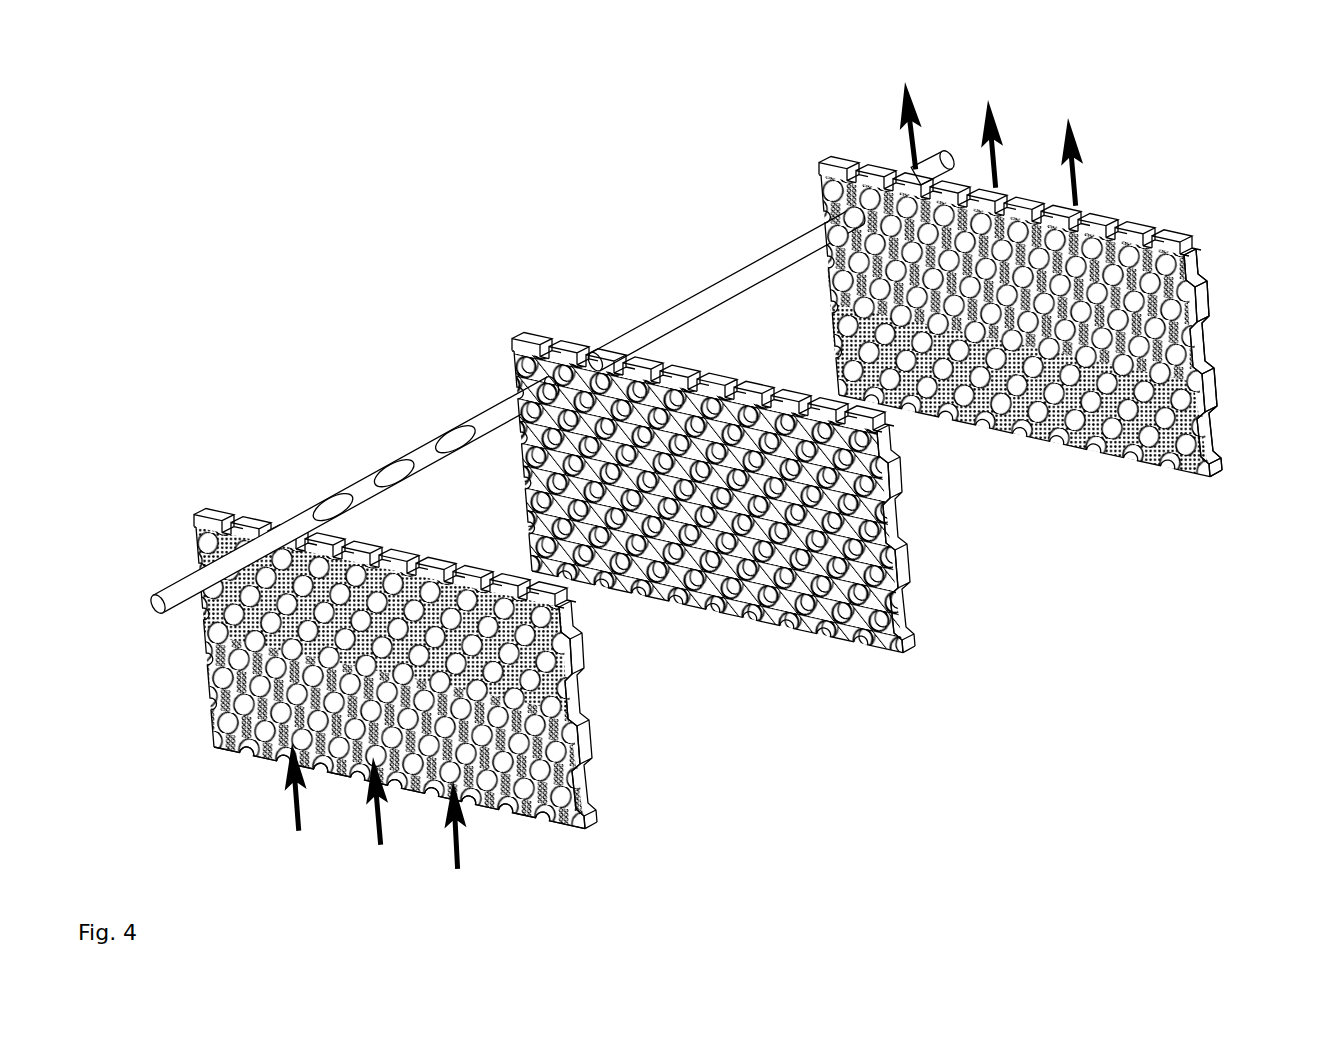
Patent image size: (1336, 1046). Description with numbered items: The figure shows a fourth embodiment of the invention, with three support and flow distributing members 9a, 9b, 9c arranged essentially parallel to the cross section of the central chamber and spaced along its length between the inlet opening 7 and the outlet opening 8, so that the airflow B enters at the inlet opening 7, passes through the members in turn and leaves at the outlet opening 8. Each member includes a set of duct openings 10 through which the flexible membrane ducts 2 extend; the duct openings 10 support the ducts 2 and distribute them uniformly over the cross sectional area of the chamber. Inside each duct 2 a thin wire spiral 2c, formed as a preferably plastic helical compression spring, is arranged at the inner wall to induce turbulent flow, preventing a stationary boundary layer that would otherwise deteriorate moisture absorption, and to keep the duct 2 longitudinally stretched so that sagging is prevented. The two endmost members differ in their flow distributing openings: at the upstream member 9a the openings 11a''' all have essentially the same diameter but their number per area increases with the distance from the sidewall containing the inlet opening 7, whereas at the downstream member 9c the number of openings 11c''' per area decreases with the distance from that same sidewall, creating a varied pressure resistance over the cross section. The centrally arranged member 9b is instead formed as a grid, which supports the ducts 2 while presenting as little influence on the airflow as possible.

The duct 2 is at (500, 403).
The wire spiral 2c is at (355, 480).
The inlet opening 7 is at (370, 912).
The outlet opening 8 is at (1033, 63).
The upstream support and flow distributing member 9a is at (195, 622).
The central support and flow distributing member 9b is at (525, 340).
The downstream support and flow distributing member 9c is at (1206, 297).
The duct openings 10 is at (583, 806).
The flow distributing openings of the upstream member 11a''' is at (339, 778).
The flow distributing openings of the downstream member 11c''' is at (1260, 335).